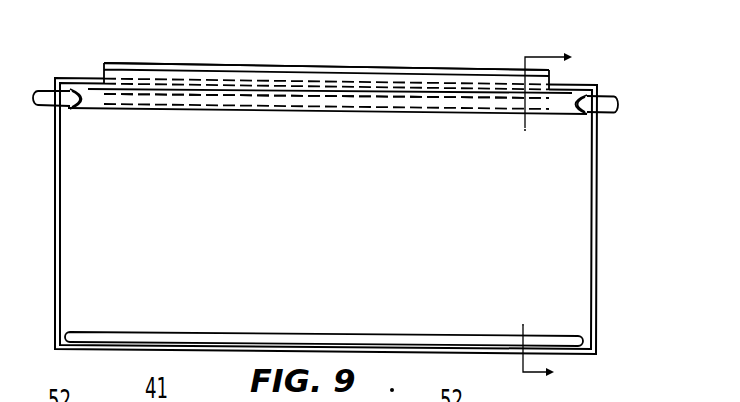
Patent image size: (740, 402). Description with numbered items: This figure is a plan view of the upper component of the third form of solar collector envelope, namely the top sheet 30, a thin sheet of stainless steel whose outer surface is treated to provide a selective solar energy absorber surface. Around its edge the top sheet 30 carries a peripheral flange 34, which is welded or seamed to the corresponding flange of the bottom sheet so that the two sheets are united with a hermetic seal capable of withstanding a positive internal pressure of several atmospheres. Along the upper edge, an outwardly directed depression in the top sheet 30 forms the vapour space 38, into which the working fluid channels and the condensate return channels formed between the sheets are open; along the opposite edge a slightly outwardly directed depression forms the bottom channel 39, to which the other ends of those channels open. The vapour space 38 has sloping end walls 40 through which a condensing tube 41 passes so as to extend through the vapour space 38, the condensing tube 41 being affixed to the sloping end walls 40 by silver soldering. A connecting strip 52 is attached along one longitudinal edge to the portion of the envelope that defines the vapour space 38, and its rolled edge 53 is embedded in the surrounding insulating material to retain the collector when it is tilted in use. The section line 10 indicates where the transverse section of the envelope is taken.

The section line 10- 10 is at (560, 219).
The top sheet 30 is at (333, 222).
The peripheral flange 34 is at (63, 78).
The vapour space 38 is at (117, 110).
The bottom channel 39 is at (192, 333).
The sloping end walls 40 is at (86, 110).
The condensing tube 41 is at (210, 98).
The connecting strip 52 is at (360, 79).
The rolled edge 53 is at (316, 65).